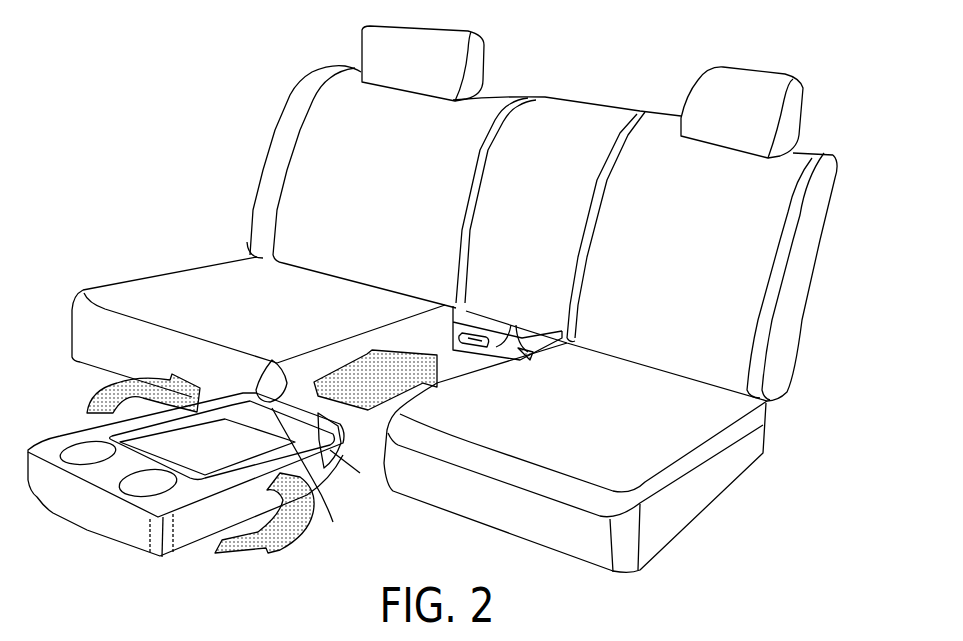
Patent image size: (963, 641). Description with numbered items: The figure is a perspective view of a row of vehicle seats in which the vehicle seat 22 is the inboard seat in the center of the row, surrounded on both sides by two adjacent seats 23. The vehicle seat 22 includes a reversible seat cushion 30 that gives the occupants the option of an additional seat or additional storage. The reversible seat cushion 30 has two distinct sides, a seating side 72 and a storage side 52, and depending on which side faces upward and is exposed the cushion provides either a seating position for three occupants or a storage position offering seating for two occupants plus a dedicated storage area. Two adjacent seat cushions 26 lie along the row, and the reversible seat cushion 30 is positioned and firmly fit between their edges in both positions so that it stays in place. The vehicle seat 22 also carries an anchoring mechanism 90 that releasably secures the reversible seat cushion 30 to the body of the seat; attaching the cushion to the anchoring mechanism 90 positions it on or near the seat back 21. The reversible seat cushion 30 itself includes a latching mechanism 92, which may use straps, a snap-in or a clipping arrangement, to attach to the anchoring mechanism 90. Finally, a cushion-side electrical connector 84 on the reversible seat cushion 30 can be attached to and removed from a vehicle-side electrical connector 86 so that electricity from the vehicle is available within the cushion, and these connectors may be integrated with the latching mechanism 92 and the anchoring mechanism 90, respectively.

The seat back 21 is at (536, 138).
The vehicle seat 22 is at (557, 156).
The adjacent seat 23 is at (338, 178).
The adjacent seat cushion 26 is at (185, 287).
The reversible seat cushion 30 is at (189, 460).
The storage side 52 is at (52, 447).
The seating side 72 is at (90, 533).
The cushion-side electrical connector 84 is at (272, 408).
The vehicle-side electrical connector 86 is at (470, 336).
The anchoring mechanism 90 is at (516, 326).
The latching mechanism 92 is at (326, 455).